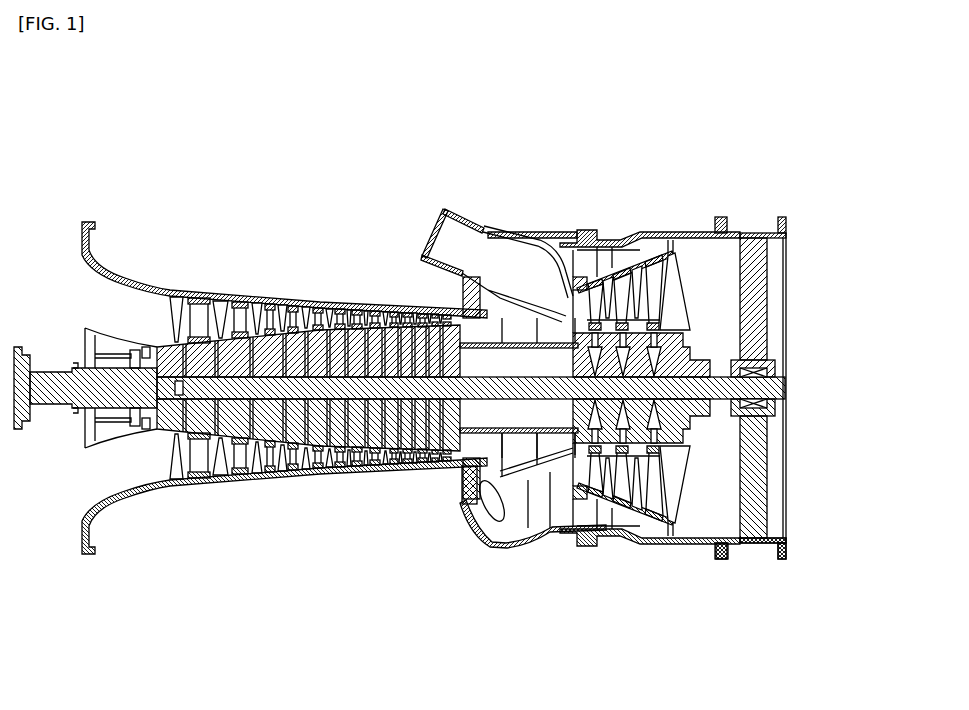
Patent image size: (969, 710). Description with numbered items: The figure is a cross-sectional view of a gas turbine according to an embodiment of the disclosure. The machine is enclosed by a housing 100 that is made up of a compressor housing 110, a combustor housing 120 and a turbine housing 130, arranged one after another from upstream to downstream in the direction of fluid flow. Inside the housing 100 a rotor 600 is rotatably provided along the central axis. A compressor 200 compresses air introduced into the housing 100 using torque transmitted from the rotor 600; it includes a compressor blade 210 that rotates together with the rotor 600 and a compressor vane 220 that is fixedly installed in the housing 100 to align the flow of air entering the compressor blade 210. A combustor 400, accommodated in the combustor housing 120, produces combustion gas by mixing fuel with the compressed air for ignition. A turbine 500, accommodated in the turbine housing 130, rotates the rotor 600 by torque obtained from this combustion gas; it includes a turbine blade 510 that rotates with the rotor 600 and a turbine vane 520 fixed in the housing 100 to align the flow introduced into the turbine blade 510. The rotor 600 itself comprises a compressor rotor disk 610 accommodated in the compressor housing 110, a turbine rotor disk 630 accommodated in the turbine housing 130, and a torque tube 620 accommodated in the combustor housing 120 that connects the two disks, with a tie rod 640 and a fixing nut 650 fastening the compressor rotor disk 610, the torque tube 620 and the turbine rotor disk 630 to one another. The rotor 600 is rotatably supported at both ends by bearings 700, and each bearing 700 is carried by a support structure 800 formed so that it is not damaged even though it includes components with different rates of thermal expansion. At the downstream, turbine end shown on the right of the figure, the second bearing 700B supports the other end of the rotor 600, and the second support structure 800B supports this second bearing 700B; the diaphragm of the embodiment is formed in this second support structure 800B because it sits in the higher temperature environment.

The housing 100 is at (411, 204).
The compressor housing 110 is at (357, 300).
The combustor housing 120 is at (503, 240).
The turbine housing 130 is at (650, 199).
The compressor 200 is at (300, 334).
The compressor blade 210 is at (178, 300).
The compressor vane 220 is at (200, 312).
The combustor 400 is at (443, 232).
The turbine 500 is at (648, 340).
The turbine blade 510 is at (682, 287).
The turbine vane 520 is at (655, 283).
The rotor 600 is at (400, 503).
The compressor rotor disk 610 is at (332, 468).
The torque tube 620 is at (517, 410).
The turbine rotor disk 630 is at (637, 410).
The tie rod 640 is at (408, 470).
The fixing nut 650 is at (733, 507).
The bearing 700 is at (806, 388).
The second bearing 700B is at (768, 370).
The support structure 800 is at (811, 388).
The second support structure 800B is at (762, 294).